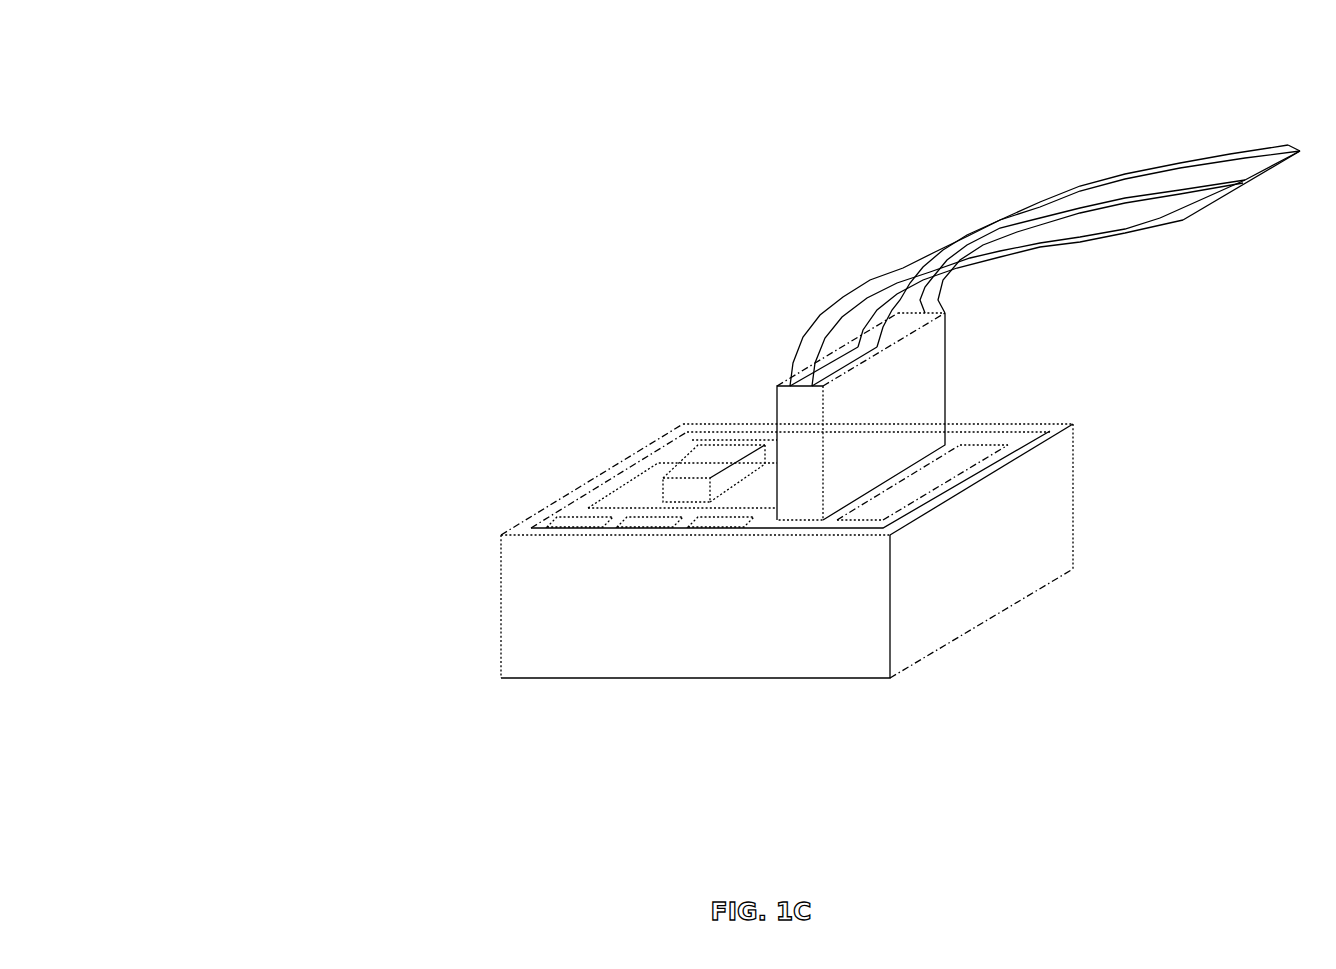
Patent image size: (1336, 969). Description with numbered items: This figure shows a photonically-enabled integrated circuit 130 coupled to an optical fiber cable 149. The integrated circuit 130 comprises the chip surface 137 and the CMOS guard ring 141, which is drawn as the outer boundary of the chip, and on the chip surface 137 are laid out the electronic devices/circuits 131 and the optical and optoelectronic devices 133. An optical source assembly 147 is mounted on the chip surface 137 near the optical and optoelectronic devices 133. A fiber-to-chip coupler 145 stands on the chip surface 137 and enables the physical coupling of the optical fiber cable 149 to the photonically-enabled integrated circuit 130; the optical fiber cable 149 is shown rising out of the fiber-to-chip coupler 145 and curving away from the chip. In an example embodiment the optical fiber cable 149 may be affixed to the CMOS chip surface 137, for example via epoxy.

The photonically-enabled integrated circuit 130 is at (339, 85).
The electronic devices/circuits 131 is at (703, 528).
The optical and optoelectronic devices 133 is at (654, 506).
The chip surface 137 is at (640, 477).
The CMOS guard ring 141 is at (1062, 426).
The fiber-to-chip coupler 145 is at (872, 428).
The optical source assembly 147 is at (723, 455).
The optical fiber cable 149 is at (1105, 175).